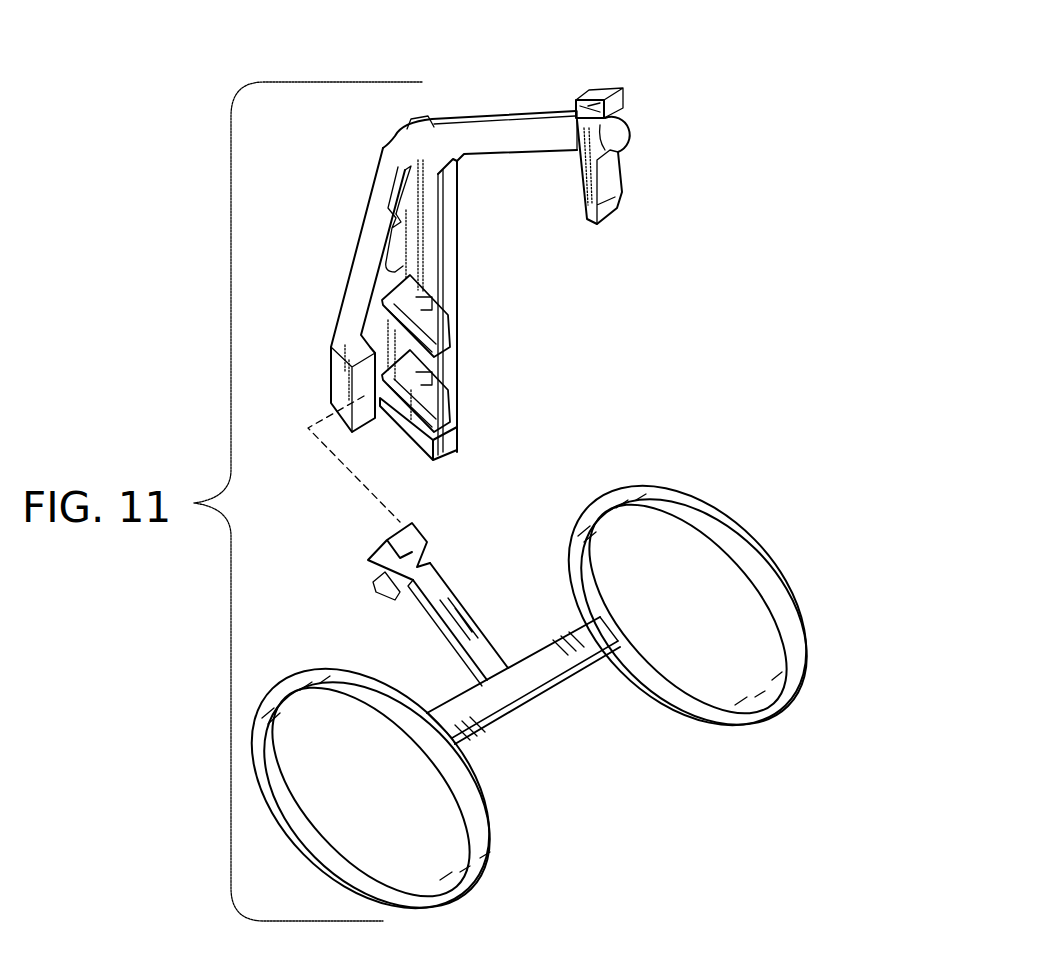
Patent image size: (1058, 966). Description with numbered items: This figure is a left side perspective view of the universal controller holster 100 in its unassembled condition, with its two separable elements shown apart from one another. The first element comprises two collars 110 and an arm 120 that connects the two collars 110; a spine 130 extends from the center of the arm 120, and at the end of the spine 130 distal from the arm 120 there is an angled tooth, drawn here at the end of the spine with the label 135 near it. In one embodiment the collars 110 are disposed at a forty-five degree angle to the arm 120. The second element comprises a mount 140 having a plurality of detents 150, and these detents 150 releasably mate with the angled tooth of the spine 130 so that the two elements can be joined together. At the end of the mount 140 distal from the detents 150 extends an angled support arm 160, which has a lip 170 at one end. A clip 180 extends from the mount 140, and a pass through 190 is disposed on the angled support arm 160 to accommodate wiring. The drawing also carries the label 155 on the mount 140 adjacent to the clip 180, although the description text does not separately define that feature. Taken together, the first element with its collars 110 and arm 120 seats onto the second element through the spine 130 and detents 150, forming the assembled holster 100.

The universal controller holster 100 is at (672, 343).
The collars 110 is at (741, 695).
The arm 120 is at (552, 670).
The spine 130 is at (457, 613).
The tab 135 is at (398, 541).
The mount 140 is at (428, 239).
The detents 150 is at (456, 402).
The inner arm 155 is at (405, 277).
The angled support arm 160 is at (487, 140).
The lip 170 is at (608, 184).
The clip 180 is at (358, 258).
The pass through 190 is at (614, 100).